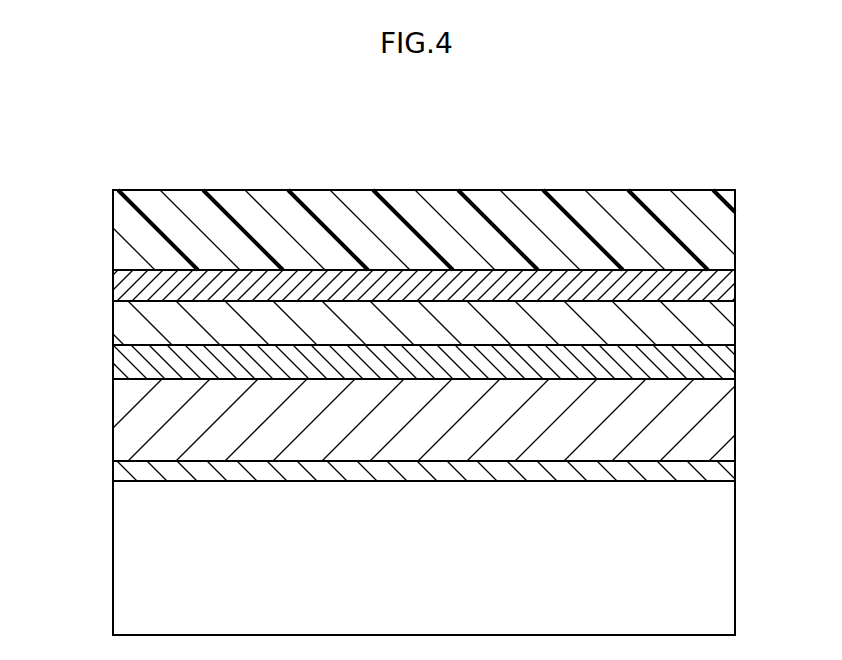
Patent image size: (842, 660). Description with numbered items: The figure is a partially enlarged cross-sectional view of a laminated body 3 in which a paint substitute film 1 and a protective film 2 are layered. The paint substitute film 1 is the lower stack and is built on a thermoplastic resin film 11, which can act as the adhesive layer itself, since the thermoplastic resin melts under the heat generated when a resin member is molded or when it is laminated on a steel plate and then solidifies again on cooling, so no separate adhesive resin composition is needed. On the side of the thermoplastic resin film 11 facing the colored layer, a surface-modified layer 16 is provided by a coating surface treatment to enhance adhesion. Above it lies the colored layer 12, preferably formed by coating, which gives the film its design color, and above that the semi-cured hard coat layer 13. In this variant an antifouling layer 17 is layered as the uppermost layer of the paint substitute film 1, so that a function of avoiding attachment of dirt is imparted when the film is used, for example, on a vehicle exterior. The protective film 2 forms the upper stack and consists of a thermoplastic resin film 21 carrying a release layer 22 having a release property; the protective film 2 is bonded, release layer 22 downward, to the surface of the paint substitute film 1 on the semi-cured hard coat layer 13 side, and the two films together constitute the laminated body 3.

The paint substitute film 1 is at (97, 635).
The protective film 2 is at (97, 190).
The laminated body 3 is at (47, 635).
The thermoplastic resin film 11 is at (735, 541).
The colored layer 12 is at (735, 413).
The semi-cured hard coat layer 13 is at (735, 360).
The surface-modified layer (colored layer side) 16 is at (735, 467).
The antifouling layer 17 is at (735, 316).
The thermoplastic resin film 21 is at (735, 225).
The release layer 22 is at (735, 279).